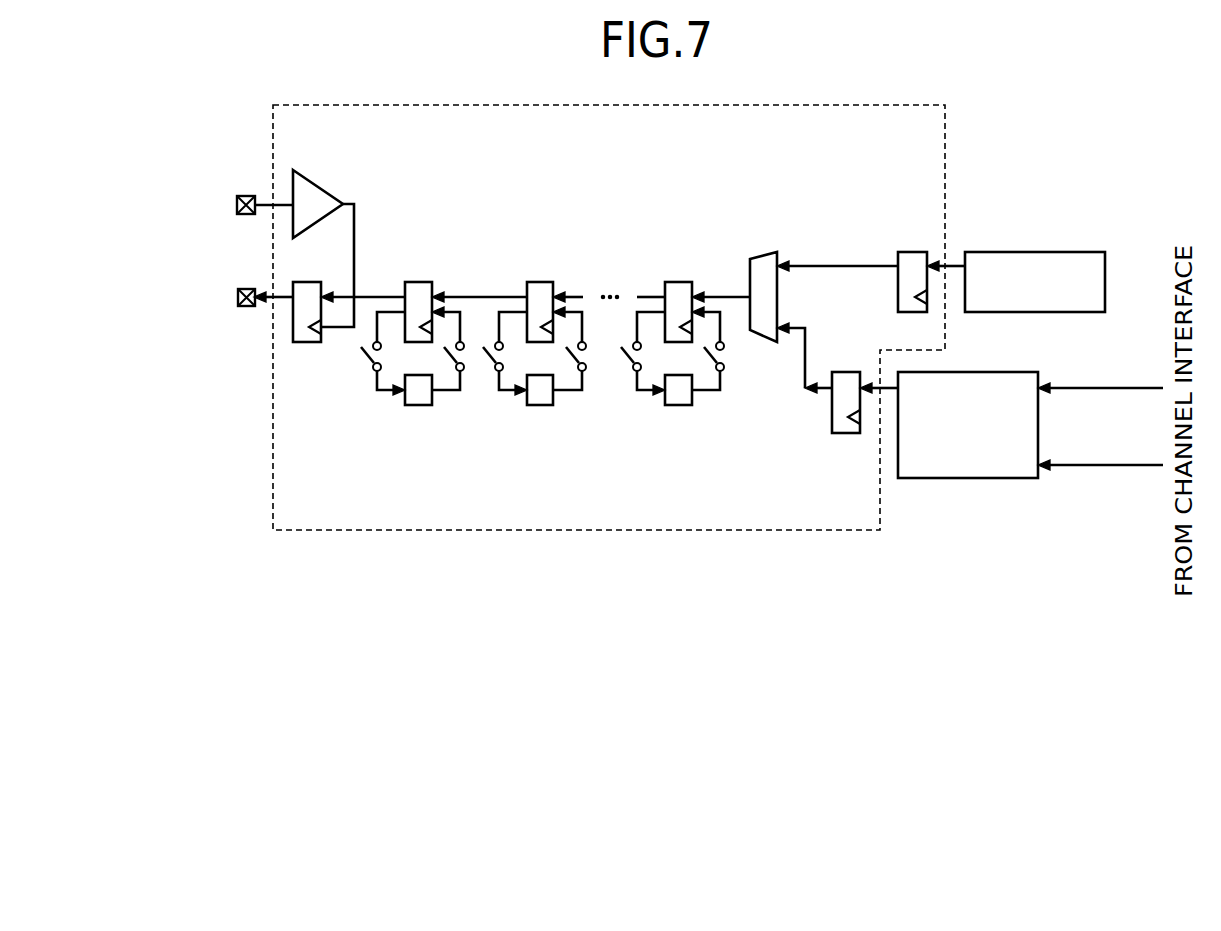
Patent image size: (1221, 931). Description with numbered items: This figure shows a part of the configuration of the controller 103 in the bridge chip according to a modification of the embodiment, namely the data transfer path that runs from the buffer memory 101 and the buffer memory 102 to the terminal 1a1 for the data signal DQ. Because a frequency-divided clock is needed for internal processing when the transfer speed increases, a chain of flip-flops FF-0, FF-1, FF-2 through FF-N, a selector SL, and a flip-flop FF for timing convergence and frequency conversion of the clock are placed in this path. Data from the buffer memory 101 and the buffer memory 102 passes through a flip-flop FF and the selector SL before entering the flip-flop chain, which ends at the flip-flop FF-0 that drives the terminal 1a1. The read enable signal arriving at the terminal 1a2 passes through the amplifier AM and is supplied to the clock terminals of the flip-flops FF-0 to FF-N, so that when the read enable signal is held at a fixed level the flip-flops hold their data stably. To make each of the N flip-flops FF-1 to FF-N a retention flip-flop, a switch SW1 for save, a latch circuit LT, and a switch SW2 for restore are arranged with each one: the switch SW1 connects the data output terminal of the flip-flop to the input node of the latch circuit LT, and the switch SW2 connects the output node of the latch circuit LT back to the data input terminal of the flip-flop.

The controller 103 is at (878, 105).
The terminal for read enable signal 1a2 is at (245, 196).
The terminal for data signal DQ 1a1 is at (247, 308).
The amplifier AM is at (313, 197).
The flip-flop FF-0 is at (305, 282).
The flip-flop FF-1 is at (417, 282).
The flip-flop FF-2 is at (538, 282).
The flip-flop FF-N is at (678, 293).
The latch circuit LT is at (420, 405).
The switch for save SW1 is at (390, 362).
The switch for restore SW2 is at (473, 362).
The selector SL is at (760, 270).
The flip-flop FF is at (910, 263).
The buffer memory 101 is at (1032, 252).
The buffer memory 102 is at (970, 478).